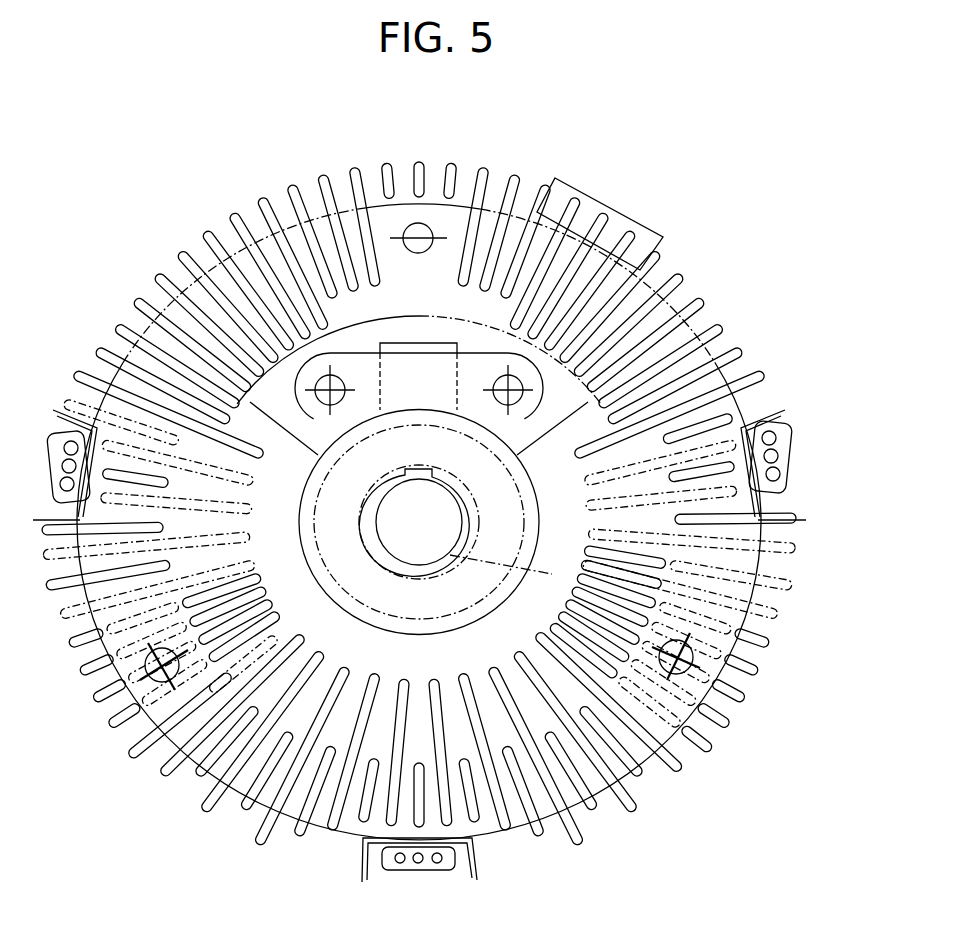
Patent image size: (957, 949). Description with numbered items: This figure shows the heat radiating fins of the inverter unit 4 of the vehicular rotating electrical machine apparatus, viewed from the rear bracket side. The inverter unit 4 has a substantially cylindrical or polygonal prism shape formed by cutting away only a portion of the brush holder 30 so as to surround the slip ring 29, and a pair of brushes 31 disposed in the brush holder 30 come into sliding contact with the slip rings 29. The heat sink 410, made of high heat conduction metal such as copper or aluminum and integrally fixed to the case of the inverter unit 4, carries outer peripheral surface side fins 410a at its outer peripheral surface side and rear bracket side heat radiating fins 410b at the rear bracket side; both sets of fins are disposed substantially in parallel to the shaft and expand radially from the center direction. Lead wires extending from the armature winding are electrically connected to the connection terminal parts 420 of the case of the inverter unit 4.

The inverter unit 4 is at (216, 270).
The slip ring 29 is at (698, 653).
The brush holder 30 is at (542, 286).
The brush 31 is at (437, 472).
The heat sink 410 is at (722, 342).
The outer peripheral surface side fin 410a is at (355, 163).
The rear bracket side heat radiating fin 410b is at (487, 168).
The connection terminal part 420 is at (780, 432).